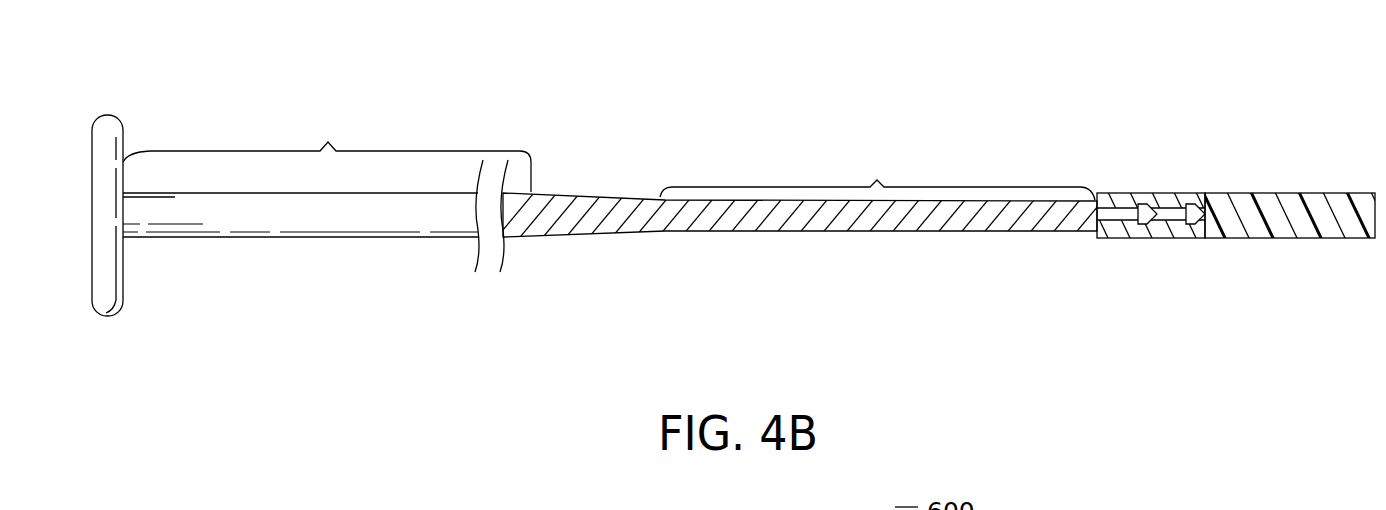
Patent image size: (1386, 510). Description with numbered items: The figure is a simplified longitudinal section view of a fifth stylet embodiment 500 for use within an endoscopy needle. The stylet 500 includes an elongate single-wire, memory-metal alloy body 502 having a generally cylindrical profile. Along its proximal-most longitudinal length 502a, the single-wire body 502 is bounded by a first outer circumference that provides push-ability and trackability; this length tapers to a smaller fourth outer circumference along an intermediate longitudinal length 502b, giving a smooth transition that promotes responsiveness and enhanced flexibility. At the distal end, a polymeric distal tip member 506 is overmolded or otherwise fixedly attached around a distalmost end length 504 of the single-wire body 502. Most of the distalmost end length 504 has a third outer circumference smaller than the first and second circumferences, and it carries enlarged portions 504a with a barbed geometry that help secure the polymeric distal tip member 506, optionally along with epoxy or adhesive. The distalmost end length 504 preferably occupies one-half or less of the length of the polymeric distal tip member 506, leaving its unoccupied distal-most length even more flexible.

The stylet 500 is at (826, 142).
The single-wire body 502 is at (627, 255).
The proximal-most longitudinal length 502a is at (328, 142).
The intermediate longitudinal length 502b is at (877, 180).
The distalmost end length 504 is at (1127, 212).
The enlarged portions 504a is at (1147, 206).
The polymeric distal tip member 506 is at (1240, 222).